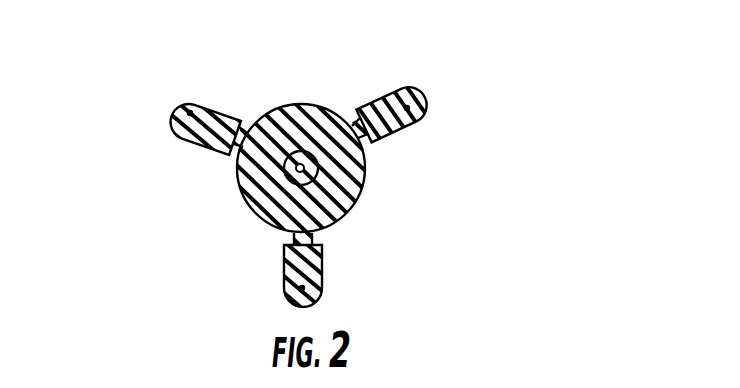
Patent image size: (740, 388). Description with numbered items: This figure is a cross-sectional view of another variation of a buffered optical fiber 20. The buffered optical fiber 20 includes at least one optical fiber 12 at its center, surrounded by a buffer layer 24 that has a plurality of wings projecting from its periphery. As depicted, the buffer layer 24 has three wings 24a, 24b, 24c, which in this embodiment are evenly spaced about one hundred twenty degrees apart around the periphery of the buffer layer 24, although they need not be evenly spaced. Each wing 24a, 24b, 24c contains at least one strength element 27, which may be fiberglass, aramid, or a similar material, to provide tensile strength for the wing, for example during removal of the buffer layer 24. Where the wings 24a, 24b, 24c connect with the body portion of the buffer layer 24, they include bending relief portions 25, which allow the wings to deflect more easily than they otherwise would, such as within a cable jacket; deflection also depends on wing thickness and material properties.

The buffered optical fiber 20 is at (134, 88).
The buffer layer 24 is at (356, 206).
The wing 24a is at (400, 93).
The wing 24b is at (200, 135).
The wing 24c is at (283, 265).
The bending relief portion 25 is at (244, 133).
The strength element 27 is at (190, 113).
The optical fiber 12 is at (318, 168).